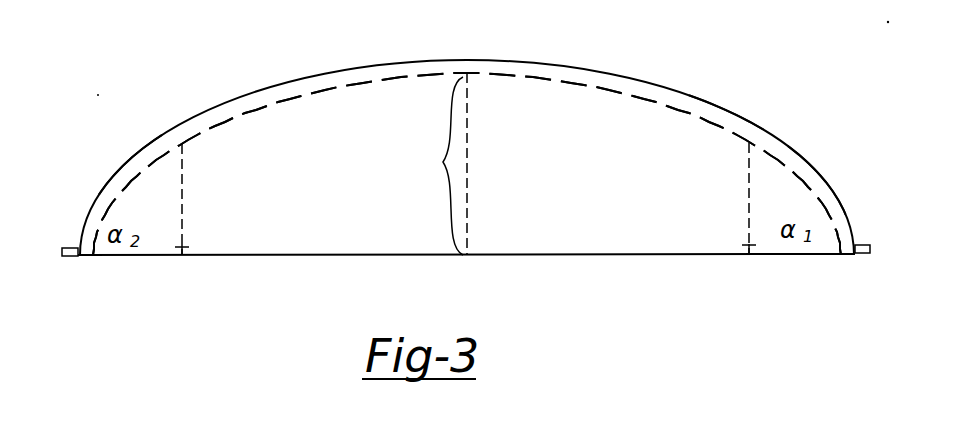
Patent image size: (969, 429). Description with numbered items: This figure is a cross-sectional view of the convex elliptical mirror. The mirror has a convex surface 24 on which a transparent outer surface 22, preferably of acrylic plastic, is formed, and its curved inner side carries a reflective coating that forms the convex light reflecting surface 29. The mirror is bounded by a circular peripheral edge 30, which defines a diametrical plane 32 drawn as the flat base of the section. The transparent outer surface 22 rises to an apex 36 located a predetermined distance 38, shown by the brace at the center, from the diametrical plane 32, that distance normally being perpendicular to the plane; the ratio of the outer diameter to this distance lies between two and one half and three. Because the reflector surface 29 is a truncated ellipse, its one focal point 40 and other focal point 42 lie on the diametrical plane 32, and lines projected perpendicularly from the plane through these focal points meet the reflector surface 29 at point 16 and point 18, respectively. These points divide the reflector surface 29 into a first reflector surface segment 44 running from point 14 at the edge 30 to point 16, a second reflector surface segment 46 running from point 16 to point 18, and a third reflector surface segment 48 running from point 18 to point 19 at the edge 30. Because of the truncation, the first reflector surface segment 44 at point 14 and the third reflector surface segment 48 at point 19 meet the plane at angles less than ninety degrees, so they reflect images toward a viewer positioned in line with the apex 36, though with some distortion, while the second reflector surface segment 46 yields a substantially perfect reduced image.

The point 14 is at (852, 256).
The point 16 is at (749, 143).
The point 18 is at (182, 144).
The point 19 is at (80, 257).
The transparent outer surface 22 is at (418, 62).
The convex surface 24 is at (540, 76).
The convex light reflecting surface 29 is at (307, 96).
The circular peripheral edge 30 is at (78, 257).
The diametrical plane 32 is at (543, 255).
The apex 36 is at (467, 60).
The predetermined distance 38 is at (437, 166).
The one focal point 40 is at (748, 244).
The other focal point 42 is at (185, 244).
The first reflector surface segment 44 is at (817, 167).
The second reflector surface segment 46 is at (715, 105).
The third reflector surface segment 48 is at (130, 162).